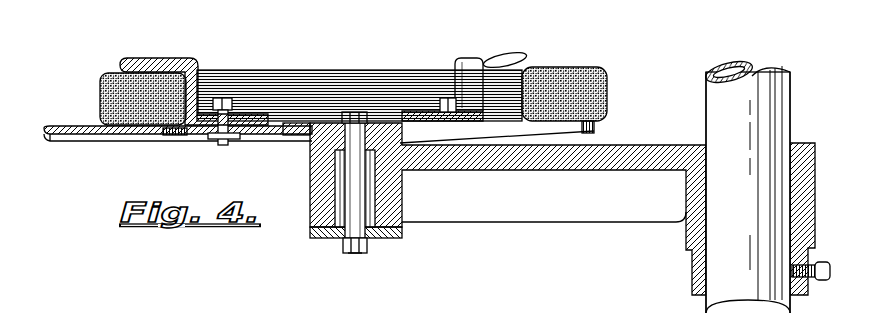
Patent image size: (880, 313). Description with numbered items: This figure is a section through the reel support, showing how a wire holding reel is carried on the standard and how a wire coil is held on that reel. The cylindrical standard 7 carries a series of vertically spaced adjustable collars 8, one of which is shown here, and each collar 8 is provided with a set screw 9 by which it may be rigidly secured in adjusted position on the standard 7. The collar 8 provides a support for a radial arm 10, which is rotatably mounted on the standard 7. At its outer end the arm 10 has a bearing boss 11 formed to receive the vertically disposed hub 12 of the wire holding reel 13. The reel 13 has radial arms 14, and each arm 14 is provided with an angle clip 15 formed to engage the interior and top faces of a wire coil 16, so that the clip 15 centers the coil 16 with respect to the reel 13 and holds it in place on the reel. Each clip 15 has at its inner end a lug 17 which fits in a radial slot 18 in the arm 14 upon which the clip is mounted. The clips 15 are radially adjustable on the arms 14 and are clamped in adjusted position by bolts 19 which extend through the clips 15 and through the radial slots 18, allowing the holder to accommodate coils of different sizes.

The cylindrical standard 7 is at (710, 88).
The adjustable collar 8 is at (691, 268).
The set screw 9 is at (822, 262).
The radial arm 10 is at (644, 147).
The bearing boss 11 is at (402, 217).
The hub 12 is at (325, 197).
The wire holding reel 13 is at (310, 137).
The radial arm 14 is at (60, 126).
The angle clip 15 is at (190, 72).
The wire coil 16 is at (102, 84).
The lug 17 is at (260, 138).
The radial slot 18 is at (185, 135).
The bolt 19 is at (217, 143).